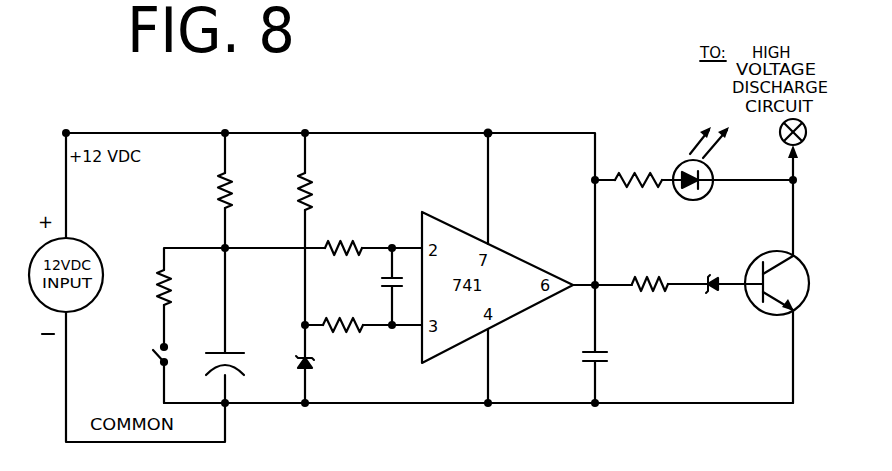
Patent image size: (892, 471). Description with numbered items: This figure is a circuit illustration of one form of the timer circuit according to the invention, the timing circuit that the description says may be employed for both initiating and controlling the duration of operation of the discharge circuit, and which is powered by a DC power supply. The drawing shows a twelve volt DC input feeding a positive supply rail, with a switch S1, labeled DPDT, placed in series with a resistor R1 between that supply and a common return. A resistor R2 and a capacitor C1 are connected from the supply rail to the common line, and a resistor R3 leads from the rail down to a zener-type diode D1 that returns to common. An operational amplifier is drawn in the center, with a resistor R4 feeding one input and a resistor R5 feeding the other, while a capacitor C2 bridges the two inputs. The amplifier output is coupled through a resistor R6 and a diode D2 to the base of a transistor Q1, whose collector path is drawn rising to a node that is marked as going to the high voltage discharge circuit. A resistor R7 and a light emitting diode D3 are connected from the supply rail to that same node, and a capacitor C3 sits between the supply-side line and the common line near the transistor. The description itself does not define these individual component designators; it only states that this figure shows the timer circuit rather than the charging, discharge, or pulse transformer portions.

The resistor R1 is at (176, 287).
The resistor R2 is at (212, 190).
The resistor R3 is at (318, 191).
The resistor R4 is at (343, 238).
The resistor R5 is at (343, 337).
The resistor R6 is at (650, 295).
The resistor R7 is at (638, 194).
The capacitor C1 is at (230, 353).
The capacitor C2 is at (373, 285).
The capacitor C3 is at (576, 357).
The zener diode D1 is at (316, 367).
The zener diode D2 is at (710, 294).
The light emitting diode D3 is at (701, 172).
The transistor Q1 is at (783, 286).
The DPDT switch S1 is at (133, 354).